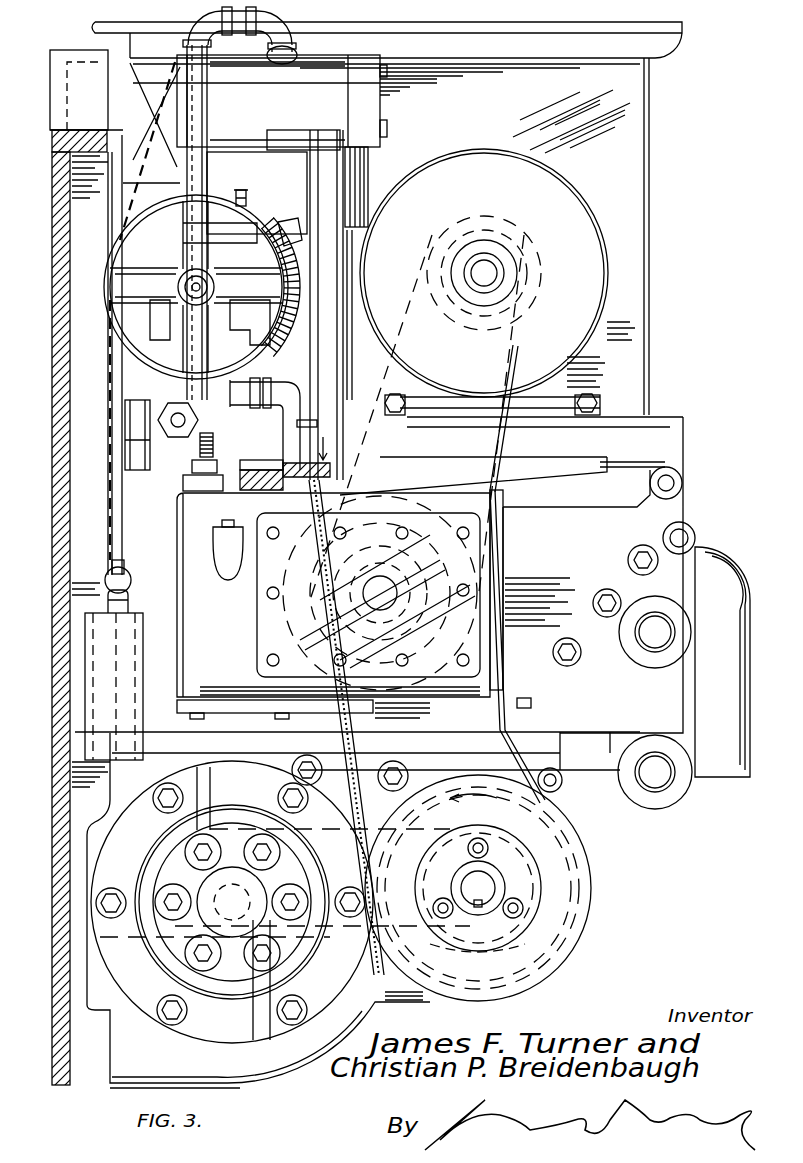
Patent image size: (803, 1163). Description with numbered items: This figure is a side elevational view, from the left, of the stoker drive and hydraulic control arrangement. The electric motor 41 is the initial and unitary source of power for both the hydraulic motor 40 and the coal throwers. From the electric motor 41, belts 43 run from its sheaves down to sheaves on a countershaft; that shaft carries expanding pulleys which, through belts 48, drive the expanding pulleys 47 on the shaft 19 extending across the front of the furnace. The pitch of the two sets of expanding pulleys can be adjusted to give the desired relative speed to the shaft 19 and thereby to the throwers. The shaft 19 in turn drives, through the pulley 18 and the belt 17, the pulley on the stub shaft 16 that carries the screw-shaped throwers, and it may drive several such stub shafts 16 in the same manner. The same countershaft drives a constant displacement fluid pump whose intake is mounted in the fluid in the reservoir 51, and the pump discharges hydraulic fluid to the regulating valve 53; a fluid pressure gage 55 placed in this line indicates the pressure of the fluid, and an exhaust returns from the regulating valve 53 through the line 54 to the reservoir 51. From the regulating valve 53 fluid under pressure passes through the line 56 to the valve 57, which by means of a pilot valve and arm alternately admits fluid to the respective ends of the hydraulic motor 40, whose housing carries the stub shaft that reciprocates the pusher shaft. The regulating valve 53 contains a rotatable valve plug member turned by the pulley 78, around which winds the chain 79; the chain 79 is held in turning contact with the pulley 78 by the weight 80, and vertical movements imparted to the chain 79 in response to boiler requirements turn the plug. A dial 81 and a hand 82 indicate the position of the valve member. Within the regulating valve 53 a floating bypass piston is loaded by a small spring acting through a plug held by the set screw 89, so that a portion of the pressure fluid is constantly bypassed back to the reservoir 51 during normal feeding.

The stub shaft 16 is at (222, 913).
The belt 17 is at (343, 953).
The pulley 18 is at (520, 940).
The shaft 19 is at (480, 884).
The hydraulic motor 40 is at (367, 190).
The electric motor 41 is at (495, 243).
The belts 43 is at (510, 440).
The expanding pulleys 47 is at (575, 848).
The belts 48 is at (507, 710).
The reservoir 51 is at (335, 593).
The regulating valve 53 is at (227, 248).
The exhaust line 54 is at (307, 440).
The fluid pressure gage 55 is at (123, 413).
The line 56 is at (205, 122).
The valve 57 is at (282, 101).
The pulley 78 is at (110, 257).
The chain 79 is at (153, 133).
The weight 80 is at (85, 668).
The dial 81 is at (288, 220).
The hand 82 is at (296, 283).
The set screw 89 is at (246, 193).